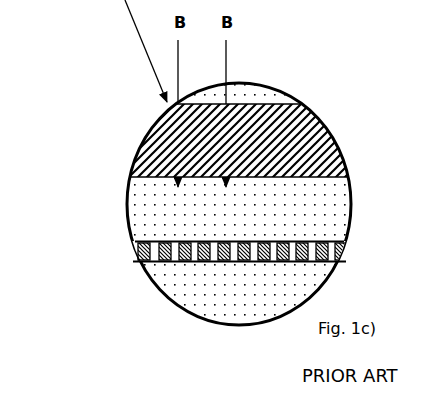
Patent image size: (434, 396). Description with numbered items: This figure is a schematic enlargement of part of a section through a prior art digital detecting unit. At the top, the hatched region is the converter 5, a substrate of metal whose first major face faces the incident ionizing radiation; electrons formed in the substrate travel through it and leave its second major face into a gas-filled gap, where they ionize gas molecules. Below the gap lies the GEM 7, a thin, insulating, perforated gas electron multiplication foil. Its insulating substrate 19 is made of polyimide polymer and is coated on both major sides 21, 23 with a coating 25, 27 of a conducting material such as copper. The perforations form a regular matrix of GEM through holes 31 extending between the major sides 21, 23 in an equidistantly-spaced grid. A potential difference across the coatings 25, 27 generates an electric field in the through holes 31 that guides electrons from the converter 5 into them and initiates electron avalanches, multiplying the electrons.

The converter 5 is at (258, 103).
The GEM 7 is at (148, 240).
The insulating substrate 19 is at (141, 252).
The major side 21 is at (272, 237).
The major side 23 is at (158, 265).
The coating 25 is at (306, 238).
The coating 27 is at (178, 265).
The GEM through hole 31 is at (292, 238).